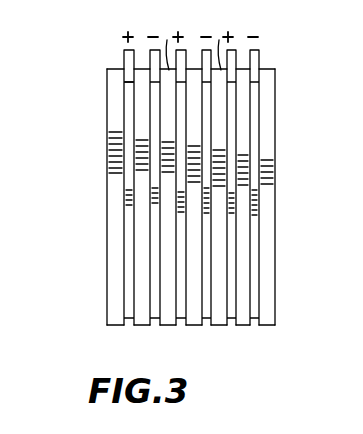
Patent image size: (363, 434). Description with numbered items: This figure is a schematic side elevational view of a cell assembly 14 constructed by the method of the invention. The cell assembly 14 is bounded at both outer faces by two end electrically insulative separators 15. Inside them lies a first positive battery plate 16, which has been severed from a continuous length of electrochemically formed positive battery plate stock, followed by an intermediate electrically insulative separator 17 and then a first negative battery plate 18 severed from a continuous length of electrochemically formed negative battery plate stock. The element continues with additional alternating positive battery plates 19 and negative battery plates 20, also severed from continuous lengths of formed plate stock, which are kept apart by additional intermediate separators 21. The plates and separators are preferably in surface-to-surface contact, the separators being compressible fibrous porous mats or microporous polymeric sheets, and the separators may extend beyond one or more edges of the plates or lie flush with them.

The cell assembly 14 is at (193, 170).
The end electrically insulative separator 15 is at (110, 128).
The first positive battery plate 16 is at (130, 277).
The intermediate electrically insulative separator 17 is at (134, 322).
The first negative battery plate 18 is at (153, 318).
The additional positive battery plate 19 is at (182, 313).
The additional negative battery plate 20 is at (213, 308).
The additional intermediate separator 21 is at (169, 70).